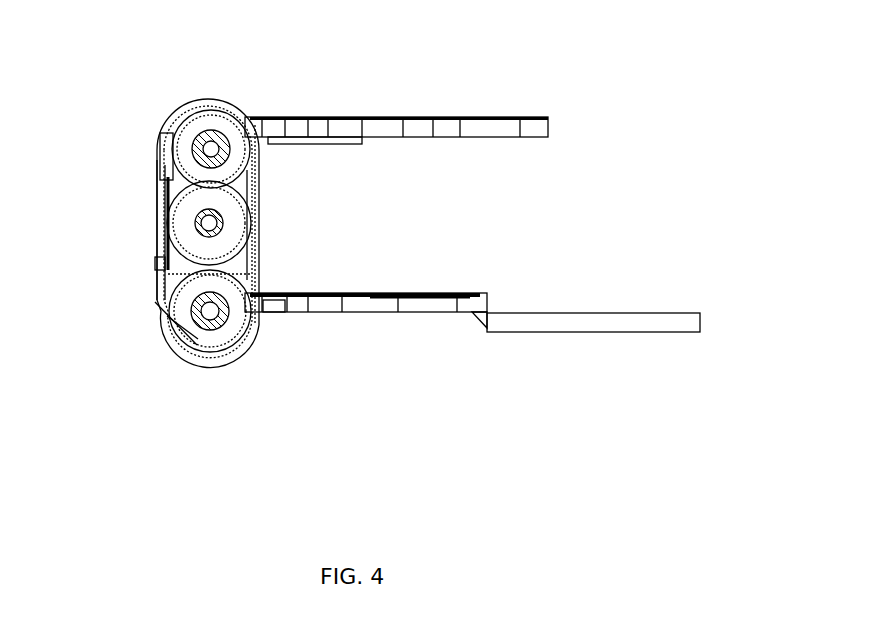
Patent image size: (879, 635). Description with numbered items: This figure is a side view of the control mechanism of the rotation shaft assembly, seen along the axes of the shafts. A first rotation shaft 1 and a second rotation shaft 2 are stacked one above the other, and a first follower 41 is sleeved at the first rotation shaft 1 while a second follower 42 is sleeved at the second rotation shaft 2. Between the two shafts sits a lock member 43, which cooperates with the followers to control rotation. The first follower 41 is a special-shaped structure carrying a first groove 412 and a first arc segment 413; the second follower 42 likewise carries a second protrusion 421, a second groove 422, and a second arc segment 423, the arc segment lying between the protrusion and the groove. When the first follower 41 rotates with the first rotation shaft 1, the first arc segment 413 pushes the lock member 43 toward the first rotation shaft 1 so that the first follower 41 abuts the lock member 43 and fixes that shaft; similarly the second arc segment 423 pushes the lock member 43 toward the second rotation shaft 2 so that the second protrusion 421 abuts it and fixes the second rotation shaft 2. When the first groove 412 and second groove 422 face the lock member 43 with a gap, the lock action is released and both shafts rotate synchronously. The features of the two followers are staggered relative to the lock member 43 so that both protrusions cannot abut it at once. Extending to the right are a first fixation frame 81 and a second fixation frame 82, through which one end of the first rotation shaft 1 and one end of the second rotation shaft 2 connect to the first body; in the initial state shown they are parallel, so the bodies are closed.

The first follower 41 is at (160, 121).
The first groove 412 is at (160, 149).
The first arc segment 413 is at (204, 112).
The first rotation shaft 1 is at (212, 151).
The second protrusion 421 is at (200, 190).
The lock member 43 is at (183, 232).
The second groove 422 is at (222, 276).
The second rotation shaft 2 is at (196, 313).
The second follower 42 is at (245, 353).
The second arc segment 423 is at (192, 340).
The first fixation frame 81 is at (402, 124).
The second fixation frame 82 is at (412, 312).